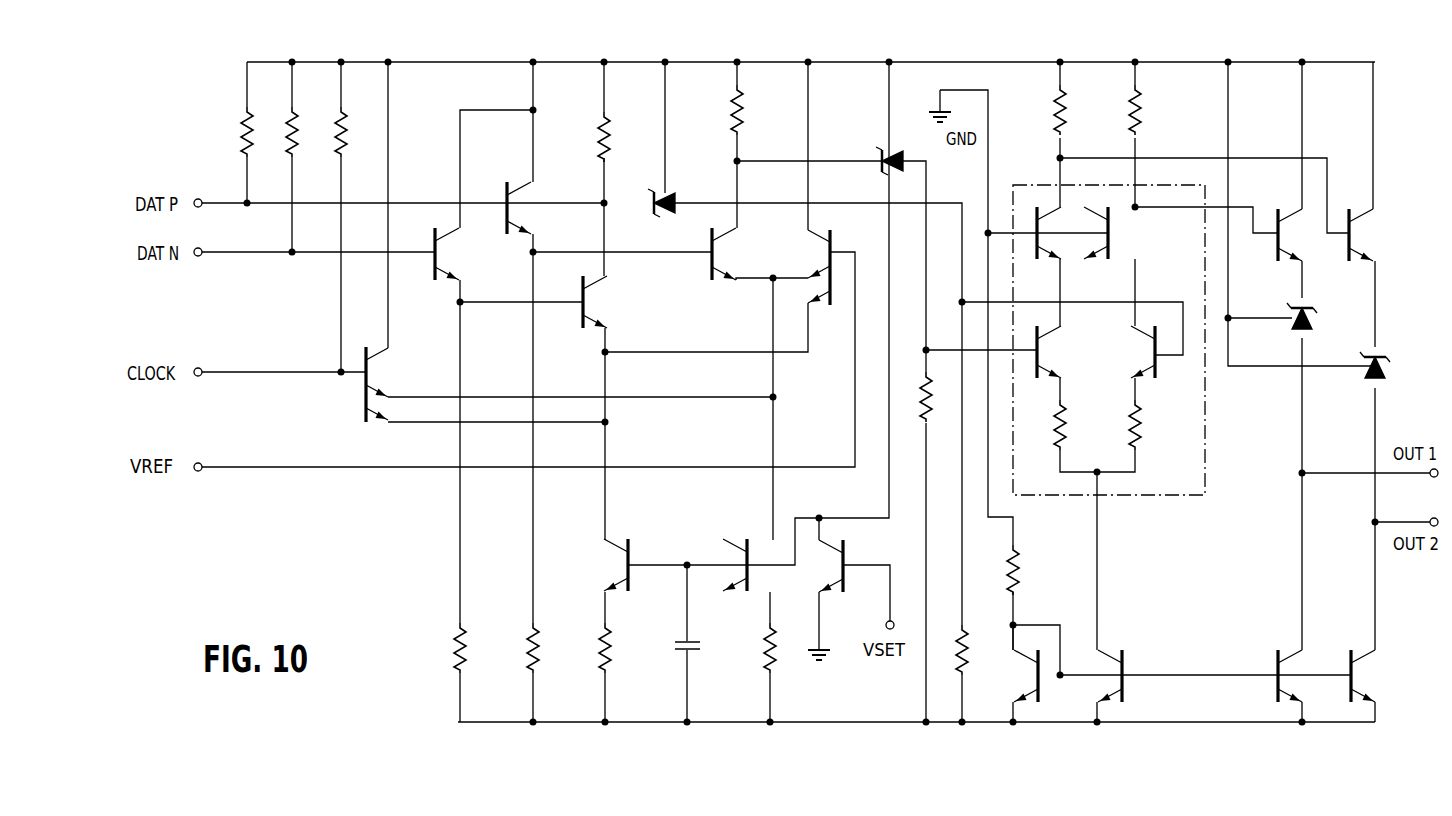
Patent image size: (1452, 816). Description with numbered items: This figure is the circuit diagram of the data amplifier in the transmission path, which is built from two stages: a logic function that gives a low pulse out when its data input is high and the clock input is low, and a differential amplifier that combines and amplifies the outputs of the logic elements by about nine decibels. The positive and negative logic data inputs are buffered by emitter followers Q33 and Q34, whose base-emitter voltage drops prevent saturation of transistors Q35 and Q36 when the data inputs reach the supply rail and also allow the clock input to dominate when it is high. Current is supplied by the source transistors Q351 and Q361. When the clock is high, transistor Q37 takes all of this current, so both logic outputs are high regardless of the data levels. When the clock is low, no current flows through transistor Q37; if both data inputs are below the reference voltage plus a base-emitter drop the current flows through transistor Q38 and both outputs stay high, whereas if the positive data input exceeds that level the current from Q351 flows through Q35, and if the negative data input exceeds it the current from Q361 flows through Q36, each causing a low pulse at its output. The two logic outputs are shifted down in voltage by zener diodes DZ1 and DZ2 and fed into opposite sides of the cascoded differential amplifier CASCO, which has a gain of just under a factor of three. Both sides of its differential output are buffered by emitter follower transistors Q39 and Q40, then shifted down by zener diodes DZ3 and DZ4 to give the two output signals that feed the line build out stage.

The emitter follower Q33 is at (531, 208).
The emitter follower Q34 is at (458, 254).
The transistor Q35 is at (737, 254).
The transistor Q36 is at (607, 302).
The transistor Q37 is at (390, 384).
The transistor Q38 is at (840, 264).
The emitter follower transistor Q39 is at (1299, 235).
The emitter follower transistor Q40 is at (1373, 235).
The current source transistor Q361 is at (630, 550).
The current source transistor Q351 is at (741, 550).
The zener diode DZ1 is at (679, 195).
The zener diode DZ2 is at (877, 148).
The zener diode DZ3 is at (1320, 316).
The zener diode DZ4 is at (1355, 374).
The cascoded differential amplifier CASCO is at (1175, 496).